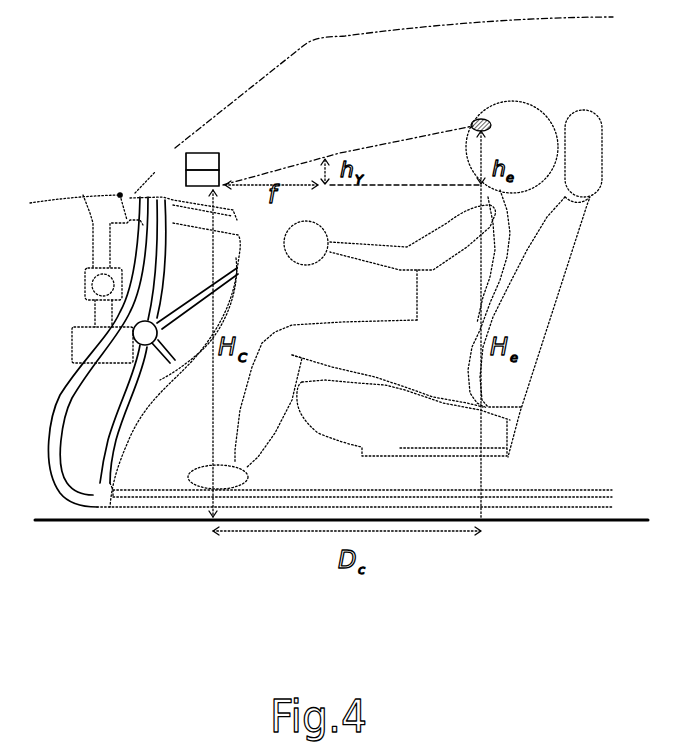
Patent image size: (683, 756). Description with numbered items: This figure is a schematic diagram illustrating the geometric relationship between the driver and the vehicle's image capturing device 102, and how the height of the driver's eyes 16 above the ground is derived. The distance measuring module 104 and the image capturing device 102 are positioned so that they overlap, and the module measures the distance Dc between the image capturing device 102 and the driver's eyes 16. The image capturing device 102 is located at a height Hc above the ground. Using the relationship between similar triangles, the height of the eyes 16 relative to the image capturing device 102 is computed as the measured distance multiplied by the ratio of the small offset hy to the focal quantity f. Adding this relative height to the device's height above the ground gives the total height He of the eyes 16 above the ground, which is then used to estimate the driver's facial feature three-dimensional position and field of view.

The driver's eyes 16 is at (483, 120).
The image capturing device 102 is at (185, 180).
The distance measuring module 104 is at (200, 152).